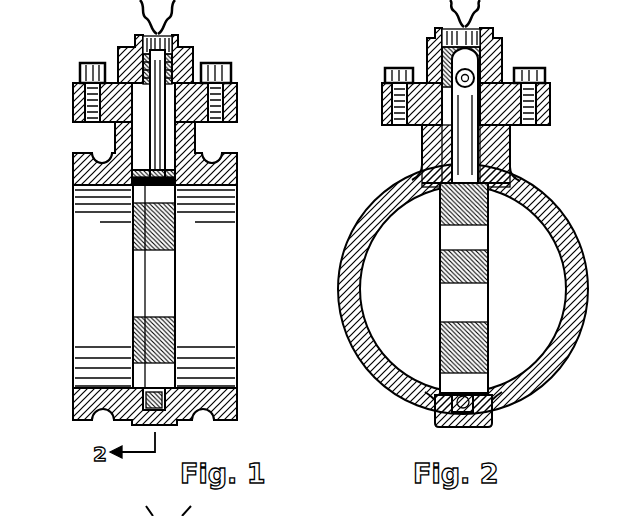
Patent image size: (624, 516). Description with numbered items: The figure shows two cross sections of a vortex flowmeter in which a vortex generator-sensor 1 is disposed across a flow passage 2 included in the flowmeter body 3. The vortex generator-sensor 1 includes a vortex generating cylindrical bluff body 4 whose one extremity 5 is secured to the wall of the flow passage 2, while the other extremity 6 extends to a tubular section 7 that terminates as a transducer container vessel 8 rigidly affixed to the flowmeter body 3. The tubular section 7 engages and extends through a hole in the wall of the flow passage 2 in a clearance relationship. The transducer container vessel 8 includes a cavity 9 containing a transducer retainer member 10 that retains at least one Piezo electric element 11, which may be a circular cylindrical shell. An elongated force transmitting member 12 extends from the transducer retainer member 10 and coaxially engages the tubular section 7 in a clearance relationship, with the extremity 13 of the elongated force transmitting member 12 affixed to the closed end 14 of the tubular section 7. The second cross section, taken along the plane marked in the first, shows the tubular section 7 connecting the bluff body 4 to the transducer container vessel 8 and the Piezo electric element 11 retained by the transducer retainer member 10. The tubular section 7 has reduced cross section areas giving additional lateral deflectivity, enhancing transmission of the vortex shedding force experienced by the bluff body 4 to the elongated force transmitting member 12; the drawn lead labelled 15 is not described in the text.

In FIG. 1, the vortex generator-sensor 1 is at (158, 295).
In FIG. 1, the flow passage 2 is at (105, 318).
In FIG. 2, the flow passage 2 is at (413, 315).
In FIG. 1, the flowmeter body 3 is at (80, 406).
In FIG. 2, the flowmeter body 3 is at (400, 393).
In FIG. 1, the vortex generating cylindrical bluff body 4 is at (140, 247).
In FIG. 2, the vortex generating cylindrical bluff body 4 is at (455, 293).
In FIG. 1, the one extremity 5 is at (150, 383).
In FIG. 1, the other extremity 6 is at (150, 188).
In FIG. 1, the tubular section 7 is at (115, 130).
In FIG. 2, the tubular section 7 is at (510, 133).
In FIG. 1, the transducer container vessel 8 is at (118, 58).
In FIG. 2, the transducer container vessel 8 is at (505, 48).
In FIG. 1, the cavity 9 is at (78, 90).
In FIG. 2, the cavity 9 is at (505, 72).
In FIG. 1, the transducer retainer member 10 is at (192, 44).
In FIG. 2, the transducer retainer member 10 is at (428, 57).
In FIG. 1, the Piezo electric element 11 is at (193, 70).
In FIG. 2, the Piezo electric element 11 is at (428, 58).
In FIG. 1, the elongated force transmitting member 12 is at (178, 135).
In FIG. 2, the elongated force transmitting member 12 is at (420, 130).
In FIG. 1, the extremity of the elongated force transmitting member 13 is at (195, 150).
In FIG. 1, the closed end of the tubular section 14 is at (115, 143).
In FIG. 1, the flange shoulder 15 is at (235, 168).
In FIG. 2, the flange shoulder 15 is at (515, 160).